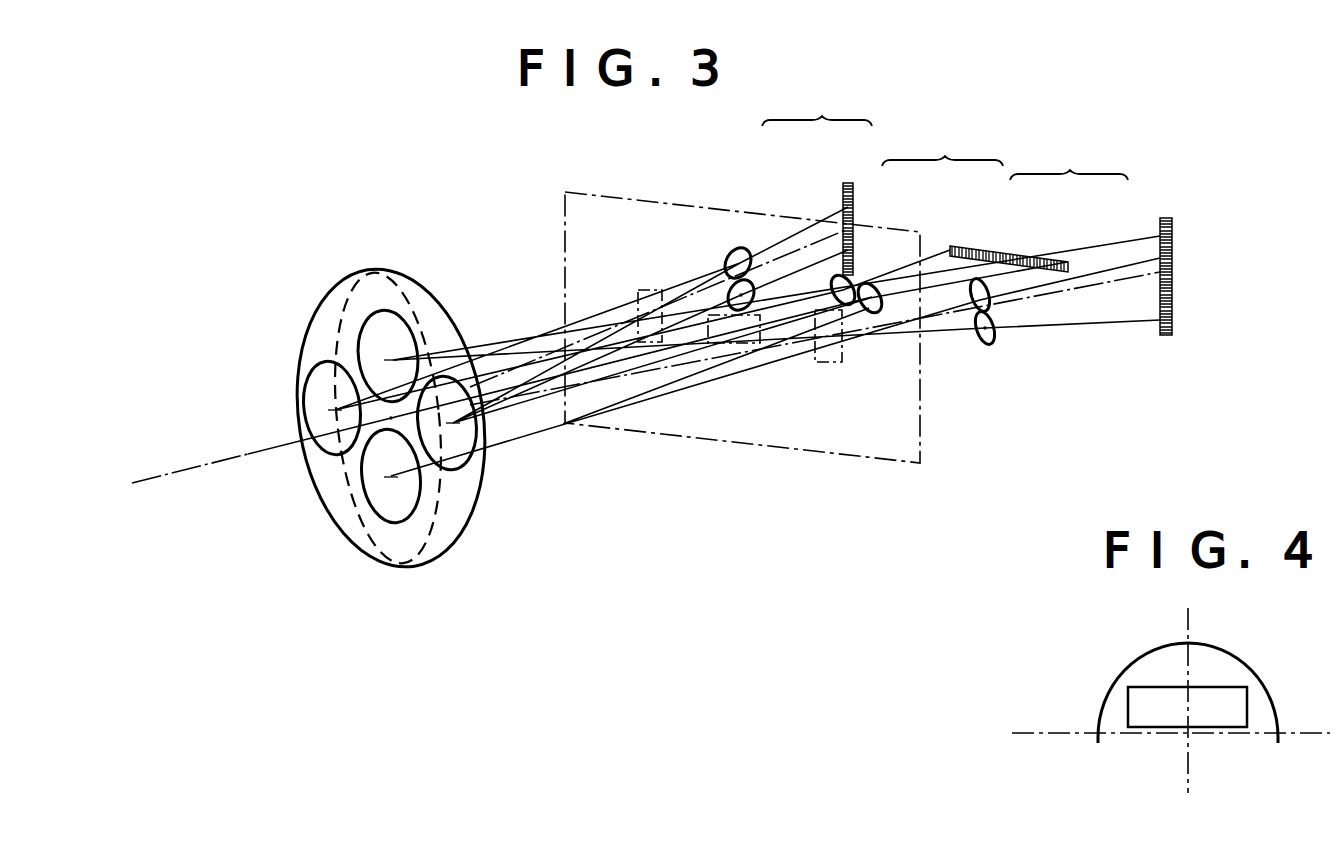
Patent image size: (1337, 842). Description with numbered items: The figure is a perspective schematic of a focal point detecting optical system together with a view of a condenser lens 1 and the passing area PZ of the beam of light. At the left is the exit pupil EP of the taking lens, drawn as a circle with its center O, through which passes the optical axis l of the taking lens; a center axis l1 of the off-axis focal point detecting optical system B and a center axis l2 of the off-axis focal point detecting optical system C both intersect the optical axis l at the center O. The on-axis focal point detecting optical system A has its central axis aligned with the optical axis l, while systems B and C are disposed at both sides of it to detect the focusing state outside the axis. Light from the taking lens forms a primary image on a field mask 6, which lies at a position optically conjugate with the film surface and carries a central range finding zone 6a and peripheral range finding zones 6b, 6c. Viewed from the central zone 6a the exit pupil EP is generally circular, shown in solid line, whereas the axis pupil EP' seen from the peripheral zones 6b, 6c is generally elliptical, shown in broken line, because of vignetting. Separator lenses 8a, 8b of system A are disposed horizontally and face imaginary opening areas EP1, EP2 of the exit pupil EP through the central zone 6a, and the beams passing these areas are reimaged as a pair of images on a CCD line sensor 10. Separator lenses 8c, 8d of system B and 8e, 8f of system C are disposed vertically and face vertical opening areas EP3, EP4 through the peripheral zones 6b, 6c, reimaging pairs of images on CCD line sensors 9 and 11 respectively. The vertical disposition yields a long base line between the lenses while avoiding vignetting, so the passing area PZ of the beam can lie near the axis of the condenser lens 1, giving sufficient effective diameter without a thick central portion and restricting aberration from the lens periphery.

In FIG. 3, the optical axis l is at (238, 452).
In FIG. 3, the center axis l1 is at (598, 330).
In FIG. 3, the center axis l2 is at (1102, 300).
In FIG. 3, the exit pupil EP is at (408, 417).
In FIG. 3, the axis pupil EP' is at (403, 412).
In FIG. 3, the opening area EP1 is at (462, 462).
In FIG. 3, the opening area EP2 is at (312, 378).
In FIG. 3, the opening area EP3 is at (403, 505).
In FIG. 3, the opening area EP4 is at (368, 330).
In FIG. 3, the center of exit pupil O is at (375, 432).
In FIG. 3, the field mask 6 is at (718, 208).
In FIG. 3, the central range finding zone 6a is at (721, 345).
In FIG. 3, the peripheral range finding zone 6b is at (640, 292).
In FIG. 3, the peripheral range finding zone 6c is at (836, 366).
In FIG. 3, the separator lens 8a is at (850, 280).
In FIG. 3, the separator lens 8b is at (873, 284).
In FIG. 3, the separator lens 8c is at (735, 250).
In FIG. 3, the separator lens 8d is at (770, 303).
In FIG. 3, the separator lens 8e is at (987, 280).
In FIG. 3, the separator lens 8f is at (993, 330).
In FIG. 3, the CCD line sensor 9 is at (848, 183).
In FIG. 3, the CCD line sensor 10 is at (957, 247).
In FIG. 3, the CCD line sensor 11 is at (1164, 220).
In FIG. 3, the focal point detecting optical system on an optical axis A is at (942, 143).
In FIG. 3, the focal point detecting optical system outside an optical axis B is at (817, 104).
In FIG. 3, the focal point detecting optical system outside an optical axis C is at (1069, 152).
In FIG. 4, the objective lens 1 is at (1265, 686).
In FIG. 4, the passing area PZ is at (1147, 700).